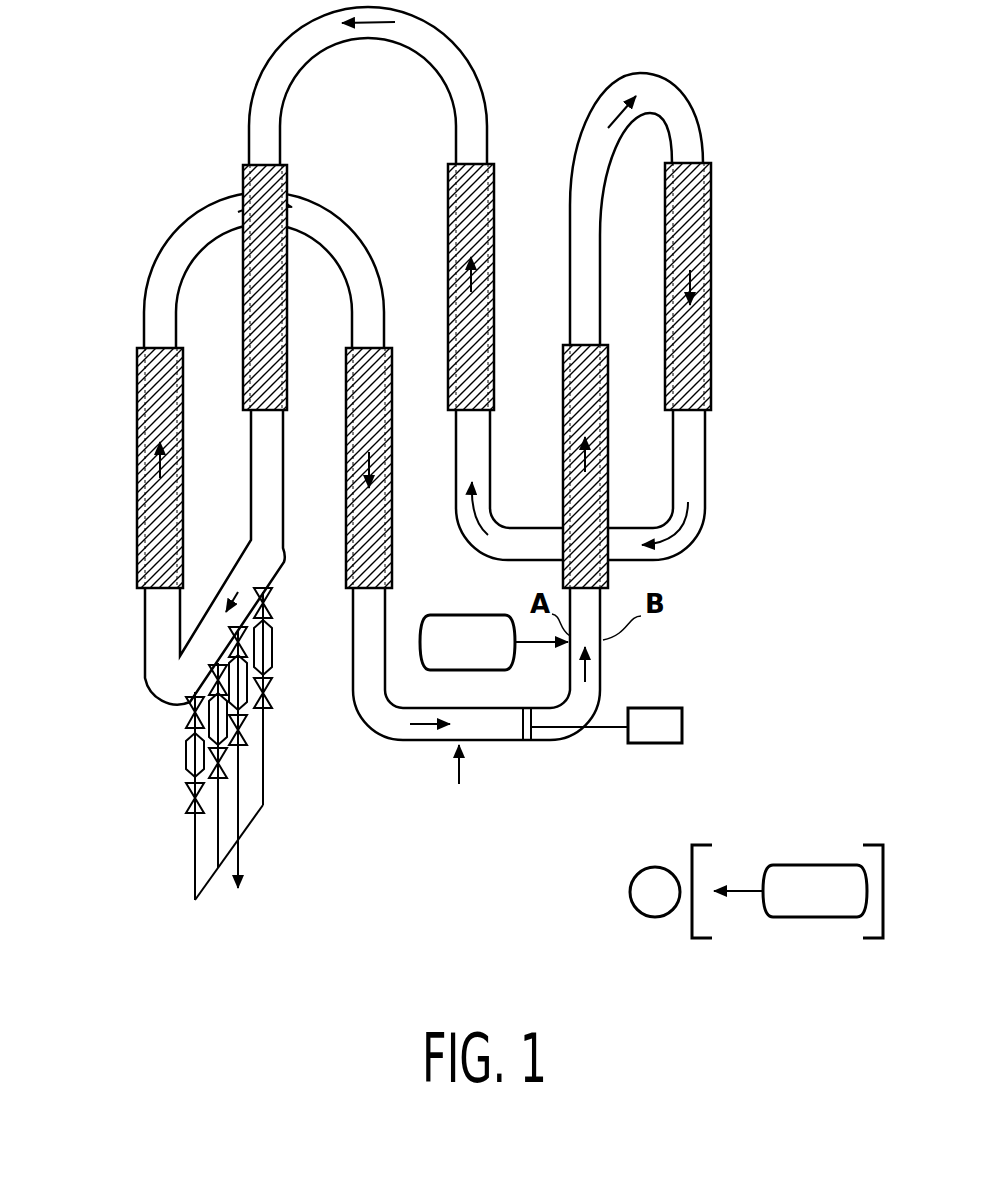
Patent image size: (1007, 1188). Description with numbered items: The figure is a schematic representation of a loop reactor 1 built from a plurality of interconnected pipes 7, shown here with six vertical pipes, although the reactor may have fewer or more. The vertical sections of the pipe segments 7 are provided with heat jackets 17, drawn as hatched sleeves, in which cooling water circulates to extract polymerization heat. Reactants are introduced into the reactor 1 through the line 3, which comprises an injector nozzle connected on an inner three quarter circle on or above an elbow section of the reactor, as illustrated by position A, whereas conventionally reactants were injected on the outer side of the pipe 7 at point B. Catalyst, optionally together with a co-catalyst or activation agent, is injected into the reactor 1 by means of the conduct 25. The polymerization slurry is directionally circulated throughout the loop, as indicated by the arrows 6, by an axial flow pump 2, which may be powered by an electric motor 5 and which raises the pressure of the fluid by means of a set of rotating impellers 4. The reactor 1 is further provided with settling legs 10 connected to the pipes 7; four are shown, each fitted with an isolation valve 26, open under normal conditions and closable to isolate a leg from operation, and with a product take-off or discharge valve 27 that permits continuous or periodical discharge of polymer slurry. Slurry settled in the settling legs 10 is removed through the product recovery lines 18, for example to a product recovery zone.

The loop reactor 1 is at (764, 100).
The axial flow pump 2 is at (553, 744).
The line 3 is at (530, 646).
The rotating impellers 4 is at (524, 744).
The electric motor 5 is at (683, 720).
The arrows 6 is at (619, 118).
The interconnected pipes 7 is at (707, 462).
The settling legs 10 is at (186, 754).
The heat jackets 17 is at (713, 315).
The product recovery lines 18 is at (229, 872).
The conduct 25 is at (459, 781).
The isolation valve 26 is at (271, 604).
The discharge valves 27 is at (186, 808).